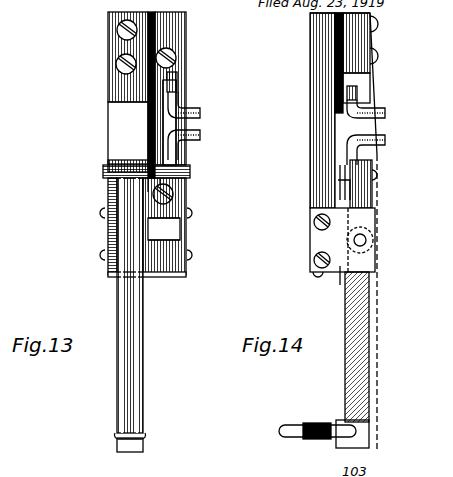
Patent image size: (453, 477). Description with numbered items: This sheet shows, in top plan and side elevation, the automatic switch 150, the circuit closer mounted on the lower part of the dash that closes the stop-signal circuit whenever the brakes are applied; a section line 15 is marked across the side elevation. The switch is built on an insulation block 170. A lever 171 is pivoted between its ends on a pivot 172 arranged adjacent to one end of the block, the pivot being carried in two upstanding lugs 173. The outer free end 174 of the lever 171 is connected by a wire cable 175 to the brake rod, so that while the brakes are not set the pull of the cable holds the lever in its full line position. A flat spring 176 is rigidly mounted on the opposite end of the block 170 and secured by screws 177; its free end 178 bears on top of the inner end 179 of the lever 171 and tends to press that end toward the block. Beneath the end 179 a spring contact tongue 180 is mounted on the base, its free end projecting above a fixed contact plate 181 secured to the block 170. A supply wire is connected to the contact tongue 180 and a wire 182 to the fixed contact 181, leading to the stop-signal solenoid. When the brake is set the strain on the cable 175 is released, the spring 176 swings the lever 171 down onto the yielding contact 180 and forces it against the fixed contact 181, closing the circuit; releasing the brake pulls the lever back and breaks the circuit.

In FIG. 14, the section line 15 is at (312, 183).
In FIG. 13, the automatic switch 150 is at (300, 248).
In FIG. 13, the insulation block 170 is at (176, 30).
In FIG. 14, the insulation block 170 is at (322, 103).
In FIG. 13, the lever 171 is at (135, 305).
In FIG. 14, the lever 171 is at (365, 356).
In FIG. 14, the pivot 172 is at (368, 242).
In FIG. 13, the upstanding lugs 173 is at (104, 216).
In FIG. 14, the upstanding lugs 173 is at (336, 276).
In FIG. 13, the free end of lever 174 is at (135, 388).
In FIG. 14, the free end of lever 174 is at (355, 431).
In FIG. 13, the wire cable 175 is at (186, 262).
In FIG. 14, the wire cable 175 is at (320, 440).
In FIG. 13, the flat spring 176 is at (118, 112).
In FIG. 14, the flat spring 176 is at (375, 108).
In FIG. 14, the screws 177 is at (383, 62).
In FIG. 14, the free end of spring 178 is at (378, 172).
In FIG. 14, the inner end of lever 179 is at (385, 190).
In FIG. 14, the spring contact tongue 180 is at (340, 182).
In FIG. 13, the fixed contact plate 181 is at (194, 112).
In FIG. 14, the fixed contact plate 181 is at (337, 192).
In FIG. 13, the wire 182 is at (200, 135).